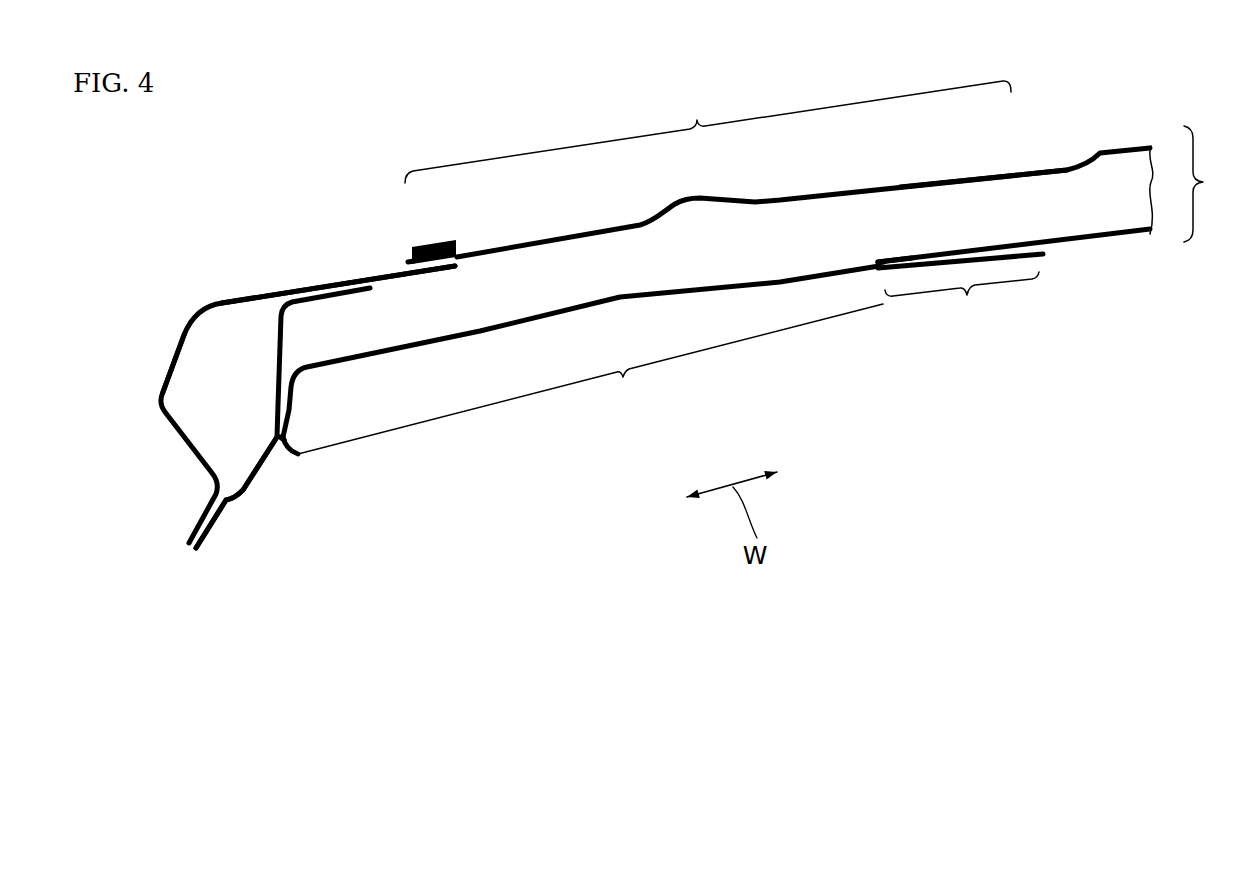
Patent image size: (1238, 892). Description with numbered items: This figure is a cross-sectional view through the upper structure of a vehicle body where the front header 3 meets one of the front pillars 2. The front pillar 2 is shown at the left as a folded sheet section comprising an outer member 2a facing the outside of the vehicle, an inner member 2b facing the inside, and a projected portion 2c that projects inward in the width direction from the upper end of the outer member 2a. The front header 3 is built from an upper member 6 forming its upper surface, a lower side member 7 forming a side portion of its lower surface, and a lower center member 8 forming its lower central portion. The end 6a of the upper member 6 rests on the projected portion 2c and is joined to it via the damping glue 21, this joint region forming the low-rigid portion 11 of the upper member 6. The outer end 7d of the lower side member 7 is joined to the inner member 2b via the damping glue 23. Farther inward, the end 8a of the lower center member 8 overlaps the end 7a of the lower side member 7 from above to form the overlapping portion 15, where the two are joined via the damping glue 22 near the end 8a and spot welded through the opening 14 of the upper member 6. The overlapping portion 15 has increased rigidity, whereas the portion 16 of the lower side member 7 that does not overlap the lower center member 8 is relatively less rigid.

The front pillar 2 is at (166, 309).
The outer member 2a is at (161, 399).
The inner member 2b is at (264, 480).
The projected portion 2c is at (386, 268).
The front header 3 is at (1193, 184).
The upper member 6 is at (578, 232).
The end of the upper member 6a is at (405, 250).
The lower side member 7 is at (507, 334).
The end of the lower side member 7a is at (1044, 256).
The outer end of the lower side member 7d is at (291, 446).
The lower center member 8 is at (1114, 238).
The end of the lower center member 8a is at (877, 260).
The low-rigid portion 11 is at (708, 132).
The opening 14 is at (972, 168).
The overlapping portion 15 is at (962, 308).
The portion 16 is at (590, 379).
The damping glue 21 is at (408, 259).
The damping glue 22 is at (878, 264).
The damping glue 23 is at (288, 444).